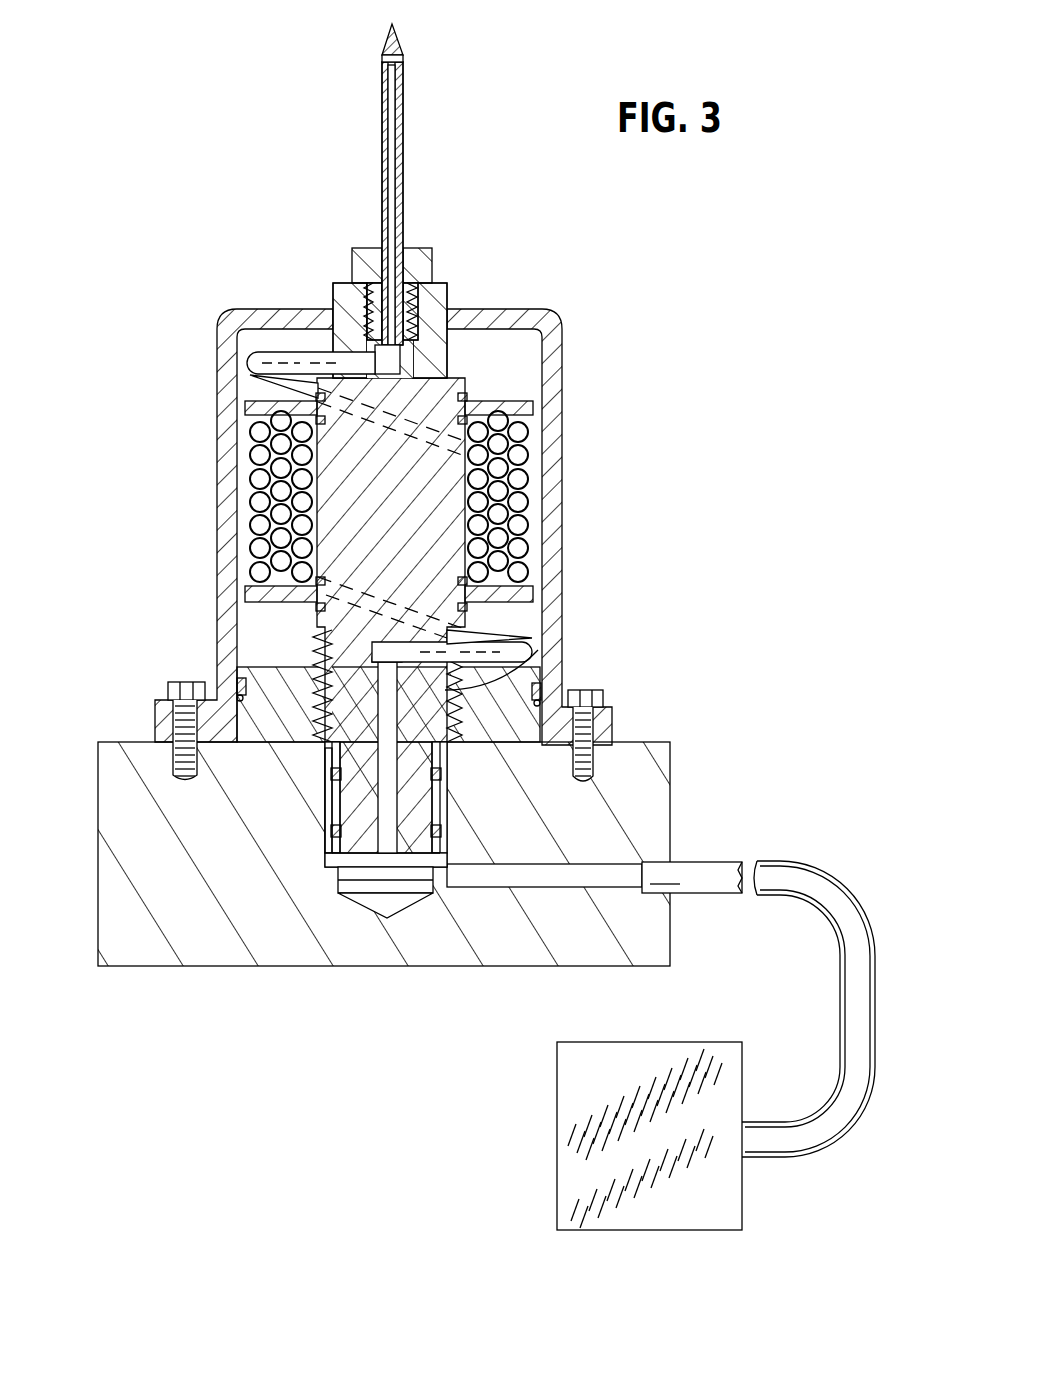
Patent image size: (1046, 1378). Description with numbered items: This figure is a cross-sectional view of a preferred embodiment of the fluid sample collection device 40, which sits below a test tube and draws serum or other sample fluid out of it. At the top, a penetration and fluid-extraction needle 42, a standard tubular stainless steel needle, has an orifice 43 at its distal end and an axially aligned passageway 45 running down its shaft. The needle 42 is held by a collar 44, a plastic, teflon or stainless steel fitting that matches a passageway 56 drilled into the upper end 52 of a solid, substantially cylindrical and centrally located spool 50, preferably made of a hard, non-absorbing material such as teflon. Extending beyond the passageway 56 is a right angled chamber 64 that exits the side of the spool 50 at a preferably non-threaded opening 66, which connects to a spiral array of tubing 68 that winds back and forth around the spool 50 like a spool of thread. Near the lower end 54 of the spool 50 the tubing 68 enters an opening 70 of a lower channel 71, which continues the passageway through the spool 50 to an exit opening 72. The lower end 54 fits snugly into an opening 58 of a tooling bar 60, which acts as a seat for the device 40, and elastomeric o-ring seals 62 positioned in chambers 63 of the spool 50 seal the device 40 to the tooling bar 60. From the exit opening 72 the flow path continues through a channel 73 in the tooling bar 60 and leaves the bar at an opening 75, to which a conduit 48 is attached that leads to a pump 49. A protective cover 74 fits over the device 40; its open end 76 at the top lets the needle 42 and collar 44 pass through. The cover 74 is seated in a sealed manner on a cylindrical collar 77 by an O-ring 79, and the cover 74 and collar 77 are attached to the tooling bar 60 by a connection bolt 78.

The sample collection device 40 is at (175, 485).
The penetration and fluid-extraction needle 42 is at (382, 160).
The orifice 43 is at (383, 62).
The collar 44 is at (368, 248).
The passageway 45 is at (403, 112).
The conduit 48 is at (800, 876).
The pump 49 is at (646, 1190).
The spool 50 is at (365, 539).
The upper end 52 is at (448, 300).
The lower end 54 is at (405, 850).
The passageway 56 is at (355, 300).
The opening 58 is at (325, 762).
The tooling bar 60 is at (128, 872).
The o-ring seals 62 is at (325, 828).
The chambers 63 is at (327, 773).
The right angled chamber 64 is at (395, 357).
The opening 66 is at (300, 322).
The tubing 68 is at (263, 432).
The opening 70 is at (538, 660).
The lower channel 71 is at (340, 665).
The exit opening 72 is at (405, 850).
The channel 73 is at (520, 880).
The protective cover 74 is at (223, 532).
The opening 75 is at (670, 862).
The open end 76 is at (367, 325).
The cylindrical collar 77 is at (165, 715).
The connection bolt 78 is at (605, 698).
The O-ring 79 is at (237, 690).